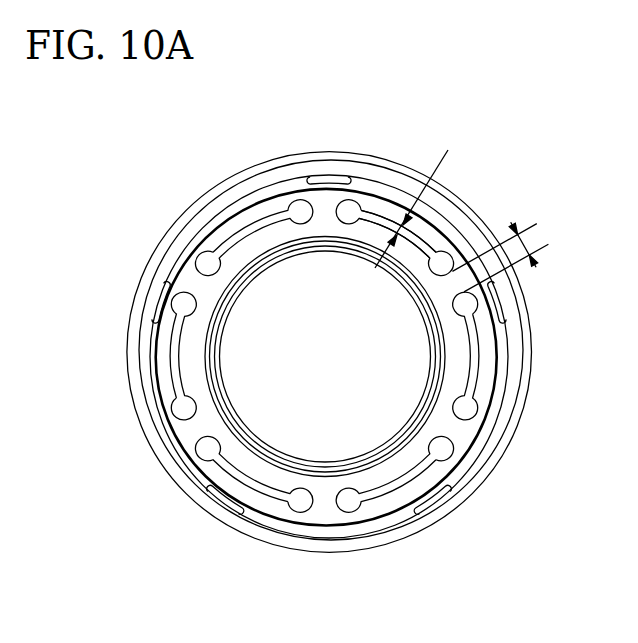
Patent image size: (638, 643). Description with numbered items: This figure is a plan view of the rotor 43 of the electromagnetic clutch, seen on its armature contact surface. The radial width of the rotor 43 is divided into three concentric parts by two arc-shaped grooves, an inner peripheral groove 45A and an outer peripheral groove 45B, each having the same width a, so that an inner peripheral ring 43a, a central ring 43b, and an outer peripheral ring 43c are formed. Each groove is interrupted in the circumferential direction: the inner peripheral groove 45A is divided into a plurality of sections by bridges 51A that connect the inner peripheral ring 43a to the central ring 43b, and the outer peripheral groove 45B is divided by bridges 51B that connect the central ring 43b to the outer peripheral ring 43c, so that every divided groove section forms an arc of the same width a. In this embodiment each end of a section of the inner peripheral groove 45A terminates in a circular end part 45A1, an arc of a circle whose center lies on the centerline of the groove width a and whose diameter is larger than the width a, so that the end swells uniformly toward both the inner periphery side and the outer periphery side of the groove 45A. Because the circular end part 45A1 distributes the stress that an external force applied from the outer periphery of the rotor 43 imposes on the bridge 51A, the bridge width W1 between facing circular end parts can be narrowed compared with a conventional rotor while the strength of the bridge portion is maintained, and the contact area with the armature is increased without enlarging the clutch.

The rotor 43 is at (200, 190).
The inner peripheral ring 43a is at (462, 343).
The central ring 43b is at (381, 512).
The outer peripheral ring 43c is at (322, 553).
The inner peripheral groove 45A is at (378, 208).
The circular end part 45A1 is at (347, 202).
The outer peripheral groove 45B is at (511, 372).
The bridge 51A is at (322, 237).
The bridge 51B is at (320, 178).
The groove width a is at (411, 205).
The bridge width W1 is at (505, 252).